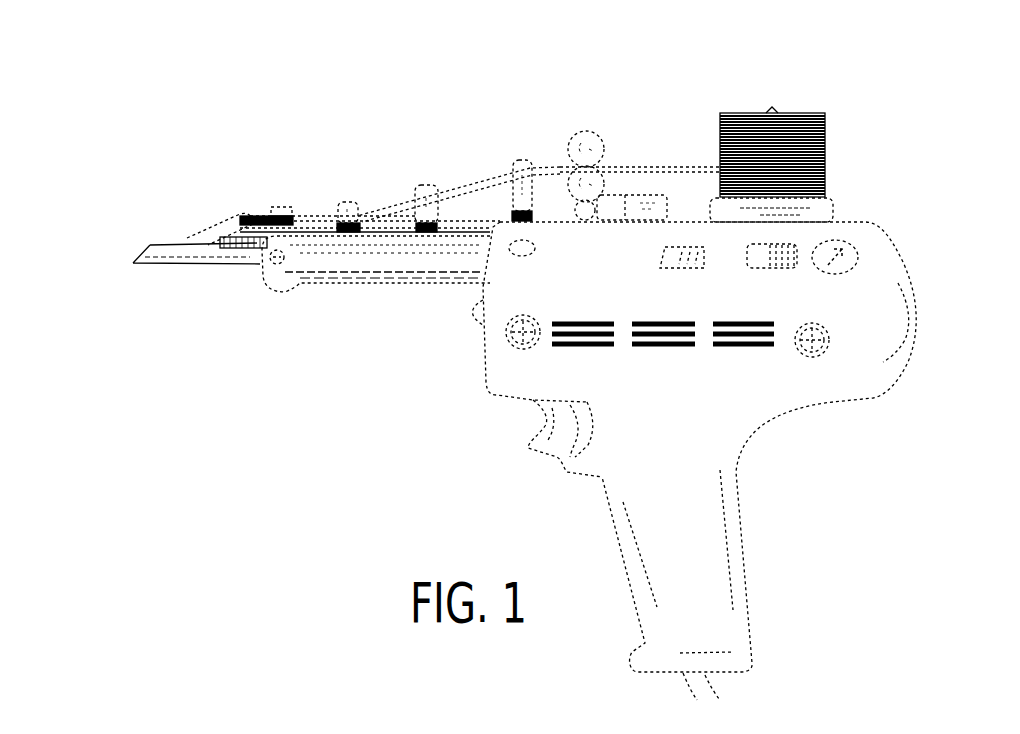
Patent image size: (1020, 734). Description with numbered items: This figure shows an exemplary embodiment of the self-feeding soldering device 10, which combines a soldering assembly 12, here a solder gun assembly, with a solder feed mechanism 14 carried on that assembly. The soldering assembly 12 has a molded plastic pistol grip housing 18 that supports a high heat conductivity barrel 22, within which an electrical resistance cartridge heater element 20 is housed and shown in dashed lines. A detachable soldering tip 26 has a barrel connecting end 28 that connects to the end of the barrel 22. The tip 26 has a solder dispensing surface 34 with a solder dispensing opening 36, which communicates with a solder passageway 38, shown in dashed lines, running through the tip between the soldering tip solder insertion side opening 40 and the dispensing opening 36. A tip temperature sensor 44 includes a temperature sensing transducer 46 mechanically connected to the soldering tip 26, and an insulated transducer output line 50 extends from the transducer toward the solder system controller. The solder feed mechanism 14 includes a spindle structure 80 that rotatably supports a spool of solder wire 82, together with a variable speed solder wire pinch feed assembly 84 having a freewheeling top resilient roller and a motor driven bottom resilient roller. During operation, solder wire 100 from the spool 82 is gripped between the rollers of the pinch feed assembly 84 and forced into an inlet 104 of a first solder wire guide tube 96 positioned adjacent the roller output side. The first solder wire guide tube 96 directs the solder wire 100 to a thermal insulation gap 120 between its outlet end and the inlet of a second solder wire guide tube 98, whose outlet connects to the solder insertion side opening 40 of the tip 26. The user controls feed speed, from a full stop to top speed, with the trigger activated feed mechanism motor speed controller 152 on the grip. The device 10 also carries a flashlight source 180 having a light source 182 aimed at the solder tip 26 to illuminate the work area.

The self-feeding soldering device 10 is at (378, 405).
The soldering assembly 12 is at (773, 452).
The solder feed mechanism 14 is at (644, 120).
The pistol grip housing 18 is at (705, 560).
The electrical resistance cartridge heater element 20 is at (377, 260).
The high heat conductivity barrel 22 is at (300, 287).
The detachable soldering tip 26 is at (172, 272).
The barrel connecting end 28 is at (257, 263).
The solder dispensing surface 34 is at (135, 261).
The solder dispensing opening 36 is at (140, 257).
The solder passageway 38 is at (150, 246).
The soldering tip solder insertion side opening 40 is at (168, 245).
The tip temperature sensor 44 is at (212, 235).
The temperature sensing transducer 46 is at (233, 247).
The insulated transducer output line 50 is at (362, 222).
The spindle structure 80 is at (771, 112).
The spool of solder wire 82 is at (845, 172).
The variable speed solder wire pinch feed assembly 84 is at (593, 117).
The first solder wire guide tube 96 is at (465, 185).
The second solder wire guide tube 98 is at (193, 240).
The solder wire 100 is at (672, 166).
The inlet 104 is at (556, 167).
The thermal insulation gap 120 is at (247, 217).
The trigger activated feed mechanism motor speed controller 152 is at (543, 422).
The flashlight source 180 is at (458, 347).
The light source 182 is at (462, 320).